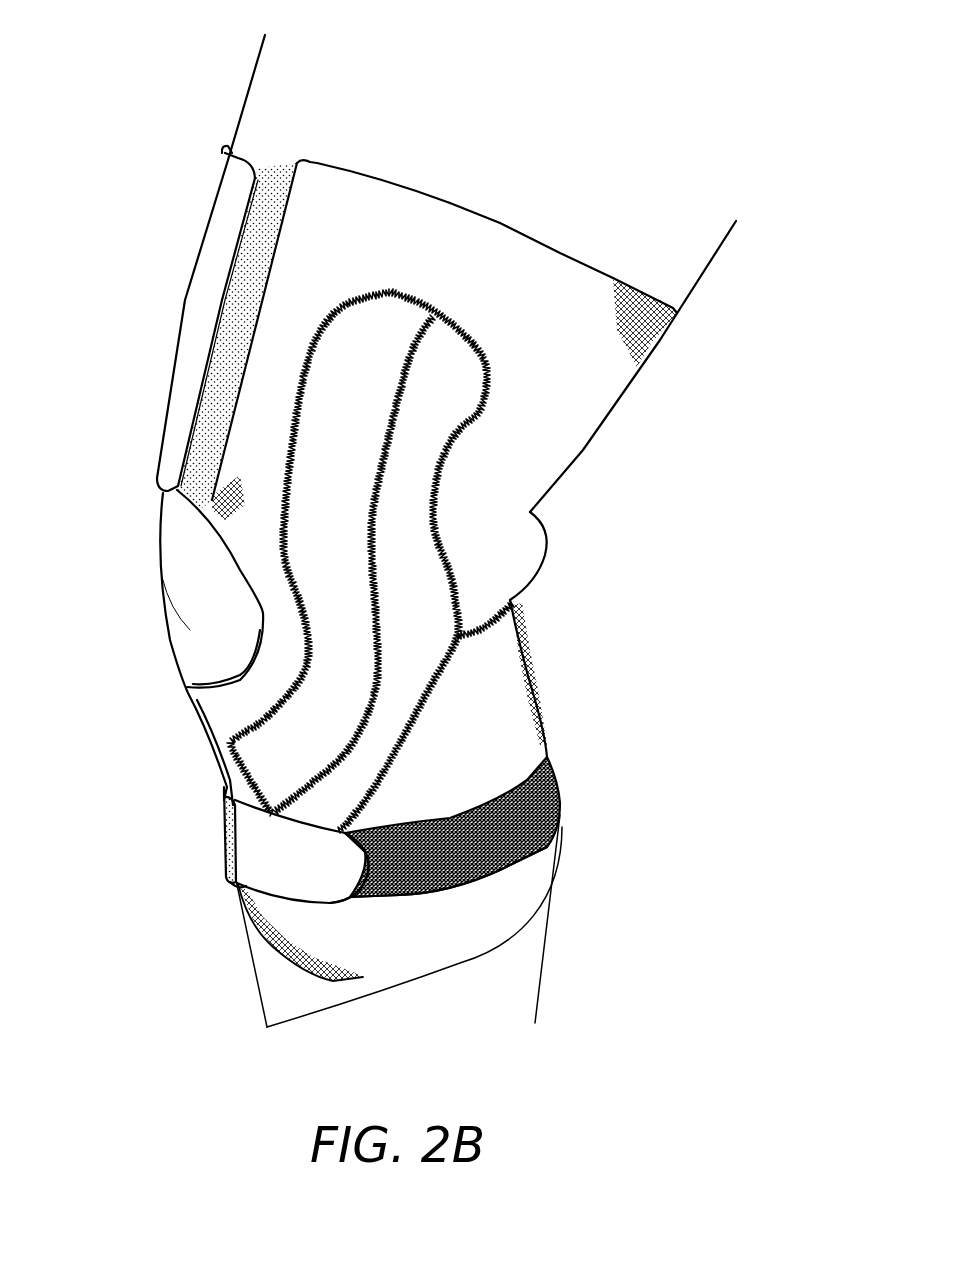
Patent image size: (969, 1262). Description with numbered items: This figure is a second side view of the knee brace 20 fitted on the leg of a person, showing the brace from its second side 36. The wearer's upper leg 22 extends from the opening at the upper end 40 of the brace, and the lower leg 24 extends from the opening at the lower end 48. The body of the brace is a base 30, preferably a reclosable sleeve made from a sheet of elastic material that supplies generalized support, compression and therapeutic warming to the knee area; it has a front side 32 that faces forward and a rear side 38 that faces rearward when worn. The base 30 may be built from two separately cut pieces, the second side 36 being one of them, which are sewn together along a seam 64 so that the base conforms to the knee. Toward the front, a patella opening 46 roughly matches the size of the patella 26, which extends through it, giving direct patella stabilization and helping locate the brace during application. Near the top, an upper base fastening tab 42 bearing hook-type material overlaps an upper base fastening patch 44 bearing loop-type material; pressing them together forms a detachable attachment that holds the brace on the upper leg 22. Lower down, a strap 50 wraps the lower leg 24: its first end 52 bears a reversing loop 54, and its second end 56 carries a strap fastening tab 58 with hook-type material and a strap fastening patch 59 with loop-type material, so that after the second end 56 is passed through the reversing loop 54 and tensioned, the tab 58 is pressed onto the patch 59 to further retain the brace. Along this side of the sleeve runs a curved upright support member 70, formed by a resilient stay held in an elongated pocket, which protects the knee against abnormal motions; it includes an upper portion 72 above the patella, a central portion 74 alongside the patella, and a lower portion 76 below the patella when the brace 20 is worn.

The knee brace 20 is at (722, 582).
The upper leg 22 is at (303, 57).
The lower leg 24 is at (510, 1005).
The patella 26 is at (170, 588).
The base 30 is at (530, 248).
The front side 32 is at (530, 282).
The second side 36 is at (522, 315).
The rear side 38 is at (547, 540).
The upper end 40 is at (333, 175).
The upper base fastening tab 42 is at (213, 260).
The upper base fastening patch 44 is at (270, 212).
The patella opening 46 is at (262, 607).
The lower end 48 is at (397, 963).
The strap 50 is at (513, 835).
The first end 52 is at (227, 815).
The reversing loop 54 is at (233, 880).
The second end 56 is at (300, 876).
The strap fastening tab 58 is at (340, 876).
The strap fastening patch 59 is at (433, 893).
The seam 64 is at (518, 608).
The curved upright support member 70 is at (420, 450).
The upper portion 72 is at (458, 362).
The central portion 74 is at (413, 517).
The lower portion 76 is at (343, 783).